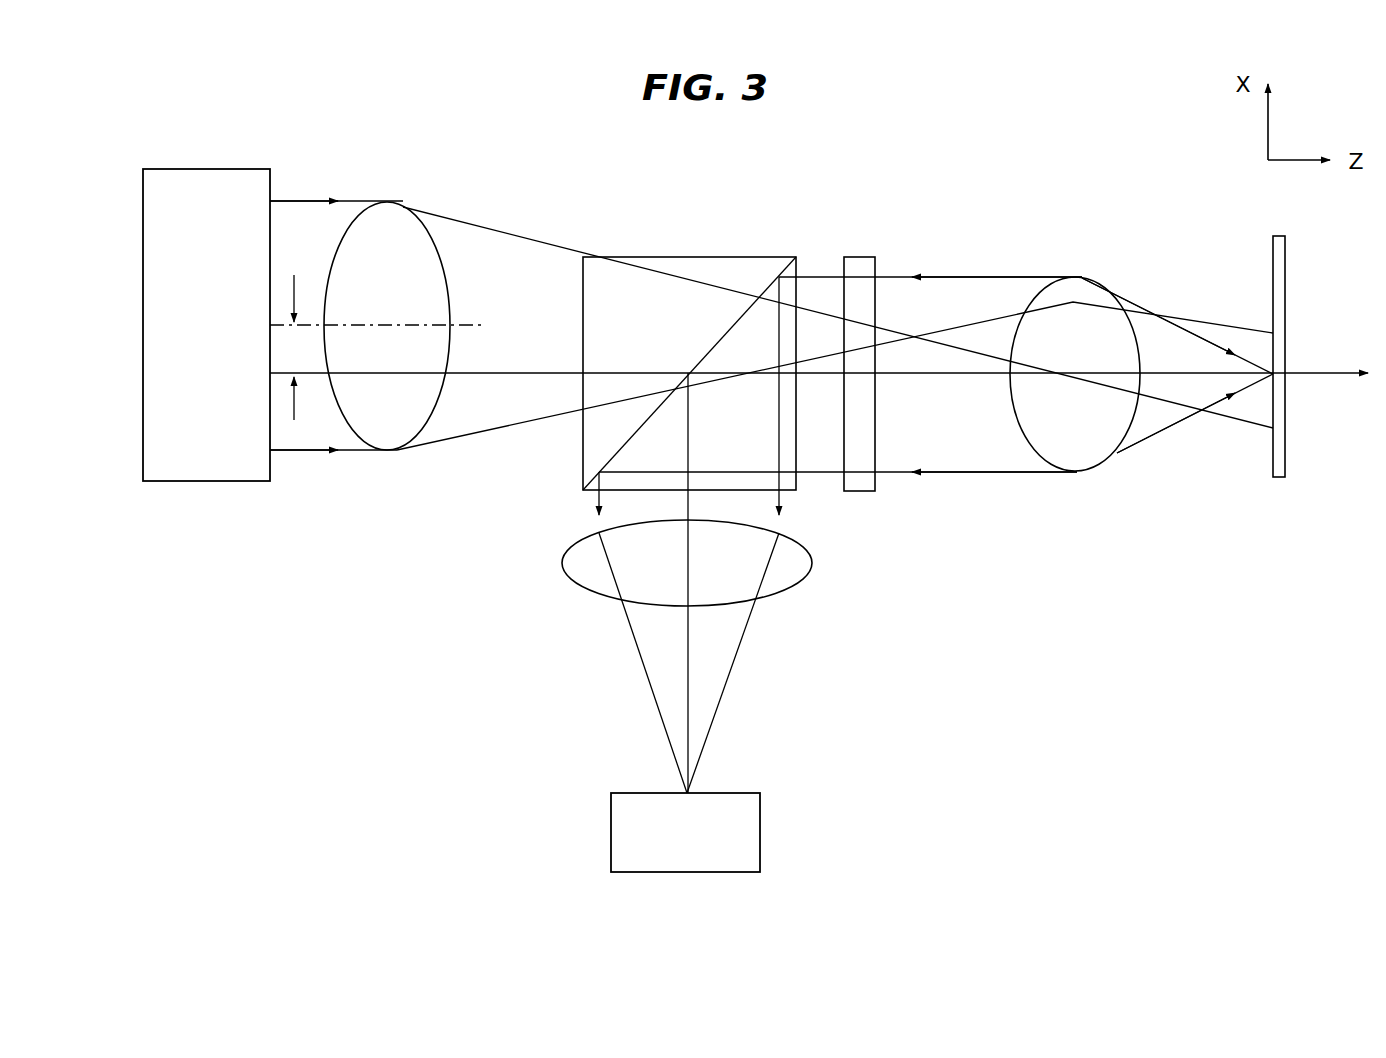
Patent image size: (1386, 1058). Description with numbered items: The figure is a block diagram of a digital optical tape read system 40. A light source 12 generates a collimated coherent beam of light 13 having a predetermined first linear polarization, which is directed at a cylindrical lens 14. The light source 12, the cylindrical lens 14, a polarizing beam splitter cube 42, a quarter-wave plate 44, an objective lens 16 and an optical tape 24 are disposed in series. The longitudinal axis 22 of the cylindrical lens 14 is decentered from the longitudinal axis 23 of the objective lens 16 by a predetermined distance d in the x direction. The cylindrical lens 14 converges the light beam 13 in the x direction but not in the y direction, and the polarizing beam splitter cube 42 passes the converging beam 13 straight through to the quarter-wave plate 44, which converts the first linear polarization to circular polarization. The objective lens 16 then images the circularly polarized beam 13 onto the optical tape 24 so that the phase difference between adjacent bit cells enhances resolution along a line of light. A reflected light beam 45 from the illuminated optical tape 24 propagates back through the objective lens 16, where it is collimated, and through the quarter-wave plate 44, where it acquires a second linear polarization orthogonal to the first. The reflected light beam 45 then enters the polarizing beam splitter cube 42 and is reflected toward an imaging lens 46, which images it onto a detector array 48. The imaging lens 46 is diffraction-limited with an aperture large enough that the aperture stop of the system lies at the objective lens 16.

The light source 12 is at (250, 169).
The collimated coherent beam of light 13 is at (347, 198).
The cylindrical lens 14 is at (398, 217).
The objective lens 16 is at (1078, 288).
The longitudinal axis of the cylindrical lens 22 is at (423, 325).
The longitudinal axis of the objective lens 23 is at (930, 375).
The optical tape 24 is at (1286, 276).
The digital optical tape read system 40 is at (913, 162).
The polarizing beam splitter cube 42 is at (716, 258).
The quarter-wave plate 44 is at (863, 258).
The reflected light beam 45 is at (1005, 276).
The imaging lens 46 is at (811, 563).
The detector array 48 is at (747, 793).